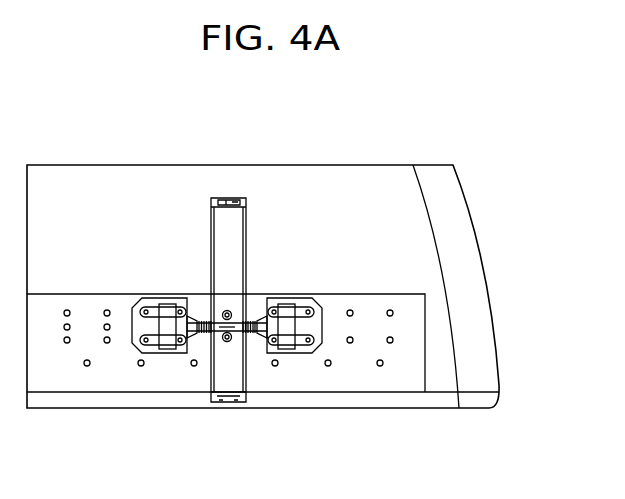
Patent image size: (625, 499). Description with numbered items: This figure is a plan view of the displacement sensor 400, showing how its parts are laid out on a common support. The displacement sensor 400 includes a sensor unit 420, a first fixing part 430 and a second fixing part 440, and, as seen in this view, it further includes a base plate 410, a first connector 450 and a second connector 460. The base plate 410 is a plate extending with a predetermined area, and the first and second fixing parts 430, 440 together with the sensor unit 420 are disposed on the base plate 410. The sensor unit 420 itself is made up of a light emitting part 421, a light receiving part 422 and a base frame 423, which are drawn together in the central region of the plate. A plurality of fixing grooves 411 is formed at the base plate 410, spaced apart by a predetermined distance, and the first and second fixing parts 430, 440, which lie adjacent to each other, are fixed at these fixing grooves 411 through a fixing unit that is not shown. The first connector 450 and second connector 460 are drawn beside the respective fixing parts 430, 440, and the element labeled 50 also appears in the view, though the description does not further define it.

The displacement sensor 400 is at (481, 159).
The base plate 410 is at (413, 340).
The fixing grooves 411 is at (350, 343).
The sensor unit 420 is at (285, 114).
The light emitting part 421 is at (225, 312).
The light receiving part 422 is at (233, 329).
The base frame 423 is at (226, 222).
The first fixing part 430 is at (313, 349).
The second fixing part 440 is at (134, 349).
The first connector 450 is at (268, 349).
The second connector 460 is at (166, 346).
The workpiece 50 is at (227, 342).